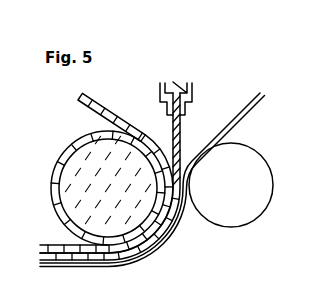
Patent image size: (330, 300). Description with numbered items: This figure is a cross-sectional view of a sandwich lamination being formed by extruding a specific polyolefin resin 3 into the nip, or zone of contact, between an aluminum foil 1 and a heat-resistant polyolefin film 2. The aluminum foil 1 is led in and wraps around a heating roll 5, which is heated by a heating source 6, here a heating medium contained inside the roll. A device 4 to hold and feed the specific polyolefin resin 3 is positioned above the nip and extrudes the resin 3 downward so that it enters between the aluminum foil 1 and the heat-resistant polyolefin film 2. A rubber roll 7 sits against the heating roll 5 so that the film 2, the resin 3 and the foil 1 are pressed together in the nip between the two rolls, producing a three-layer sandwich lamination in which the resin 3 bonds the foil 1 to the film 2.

The aluminum foil 1 is at (105, 108).
The heat-resistant polyolefin film 2 is at (260, 104).
The specific polyolefin resin 3 is at (182, 140).
The device to hold and feed the specific polyolefin resin 4 is at (190, 99).
The heating roll 5 is at (75, 145).
The heating source 6 is at (77, 190).
The rubber roll 7 is at (247, 200).